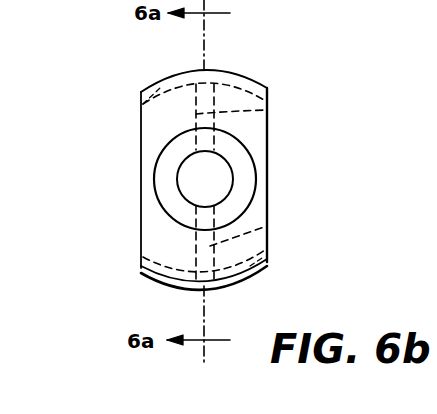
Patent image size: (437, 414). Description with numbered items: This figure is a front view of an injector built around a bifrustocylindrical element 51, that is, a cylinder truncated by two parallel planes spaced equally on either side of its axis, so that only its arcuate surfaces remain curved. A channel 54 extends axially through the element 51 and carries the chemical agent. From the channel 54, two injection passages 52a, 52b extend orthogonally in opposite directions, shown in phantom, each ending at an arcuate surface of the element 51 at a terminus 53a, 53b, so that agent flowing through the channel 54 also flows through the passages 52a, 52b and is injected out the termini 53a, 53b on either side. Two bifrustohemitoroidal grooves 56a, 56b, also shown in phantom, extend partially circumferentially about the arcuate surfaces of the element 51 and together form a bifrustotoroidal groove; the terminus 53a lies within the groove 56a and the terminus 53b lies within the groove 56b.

The bifrustocylindrical element 51 is at (141, 172).
The injection passage 52a is at (267, 110).
The injection passage 52b is at (267, 226).
The terminus 53a is at (207, 92).
The terminus 53b is at (200, 287).
The channel 54 is at (205, 179).
The bifrustohemitoroidal groove 56a is at (165, 88).
The bifrustohemitoroidal groove 56b is at (255, 285).